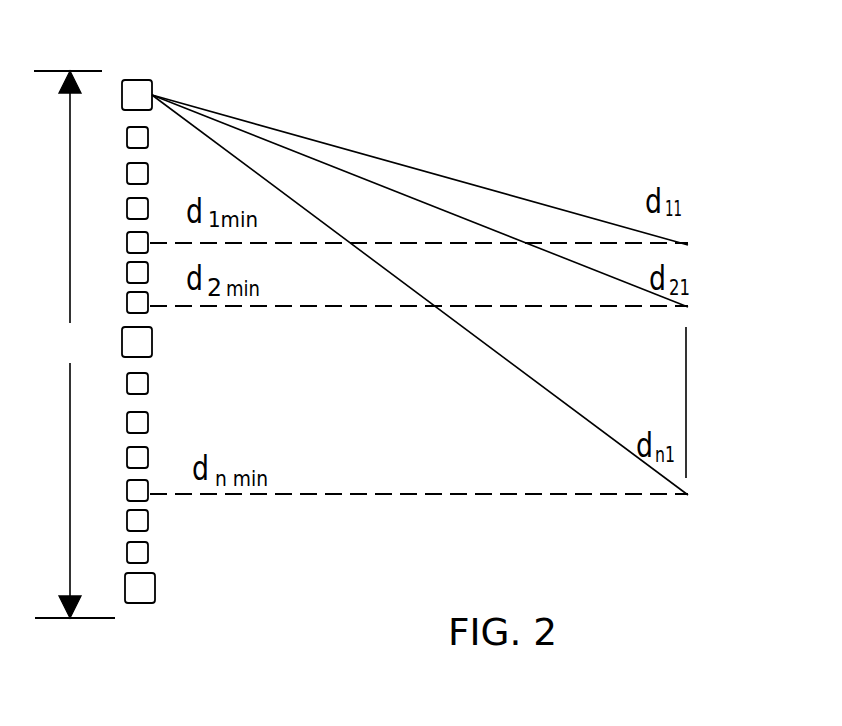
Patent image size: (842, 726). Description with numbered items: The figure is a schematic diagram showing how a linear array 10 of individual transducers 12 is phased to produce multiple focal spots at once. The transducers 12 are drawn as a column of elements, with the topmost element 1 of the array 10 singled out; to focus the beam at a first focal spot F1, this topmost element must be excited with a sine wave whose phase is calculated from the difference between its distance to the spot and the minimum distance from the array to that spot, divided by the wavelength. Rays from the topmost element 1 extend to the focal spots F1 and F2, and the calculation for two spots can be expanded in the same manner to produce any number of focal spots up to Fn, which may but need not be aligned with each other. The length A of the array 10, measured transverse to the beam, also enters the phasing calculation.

The linear array 10 is at (166, 609).
The individual transducer 12 is at (140, 80).
The topmost element 1 is at (420, 271).
The length of the array A is at (74, 344).
The first focal spot F1 is at (705, 355).
The second focal spot F2 is at (713, 313).
The nth focal spot Fn is at (713, 500).